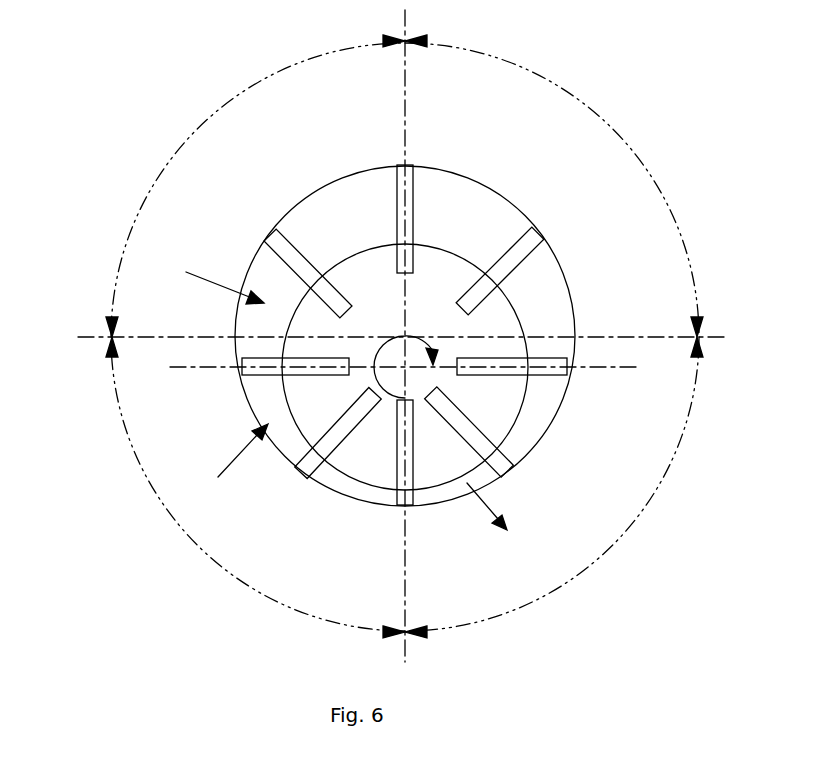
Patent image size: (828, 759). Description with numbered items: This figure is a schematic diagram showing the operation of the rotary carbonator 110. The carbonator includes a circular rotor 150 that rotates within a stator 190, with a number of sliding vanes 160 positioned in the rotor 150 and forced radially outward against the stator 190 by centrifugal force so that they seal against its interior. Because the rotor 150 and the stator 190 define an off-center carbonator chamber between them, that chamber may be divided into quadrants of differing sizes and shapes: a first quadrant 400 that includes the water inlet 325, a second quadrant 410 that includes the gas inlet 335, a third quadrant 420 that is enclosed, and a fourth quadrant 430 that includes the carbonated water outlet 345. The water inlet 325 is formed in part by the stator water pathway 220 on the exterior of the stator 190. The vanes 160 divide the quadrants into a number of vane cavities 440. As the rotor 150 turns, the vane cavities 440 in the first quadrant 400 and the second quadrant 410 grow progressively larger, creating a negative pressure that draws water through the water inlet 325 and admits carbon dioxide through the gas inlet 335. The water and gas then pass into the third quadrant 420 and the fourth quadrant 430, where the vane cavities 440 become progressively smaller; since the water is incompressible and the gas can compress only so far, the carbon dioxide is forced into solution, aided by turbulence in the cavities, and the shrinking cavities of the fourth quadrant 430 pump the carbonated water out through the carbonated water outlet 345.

The rotary carbonator 110 is at (140, 63).
The circular rotor 150 is at (430, 245).
The sliding vanes 160 is at (515, 268).
The stator 190 is at (450, 168).
The stator water pathway 220 is at (477, 222).
The water inlet 325 is at (235, 455).
The gas inlet 335 is at (212, 282).
The carbonated water outlet 345 is at (487, 505).
The first quadrant 400 is at (215, 568).
The second quadrant 410 is at (165, 162).
The third quadrant 420 is at (640, 148).
The fourth quadrant 430 is at (675, 455).
The vane cavities 440 is at (262, 393).